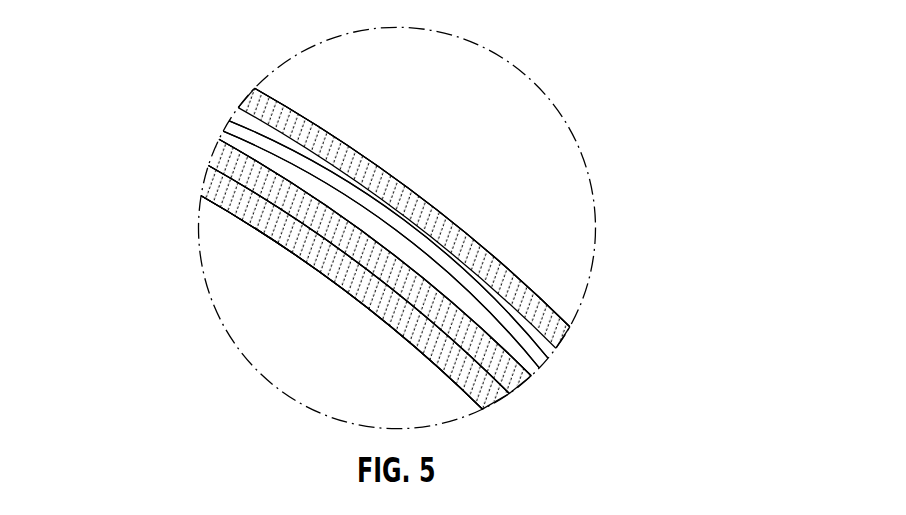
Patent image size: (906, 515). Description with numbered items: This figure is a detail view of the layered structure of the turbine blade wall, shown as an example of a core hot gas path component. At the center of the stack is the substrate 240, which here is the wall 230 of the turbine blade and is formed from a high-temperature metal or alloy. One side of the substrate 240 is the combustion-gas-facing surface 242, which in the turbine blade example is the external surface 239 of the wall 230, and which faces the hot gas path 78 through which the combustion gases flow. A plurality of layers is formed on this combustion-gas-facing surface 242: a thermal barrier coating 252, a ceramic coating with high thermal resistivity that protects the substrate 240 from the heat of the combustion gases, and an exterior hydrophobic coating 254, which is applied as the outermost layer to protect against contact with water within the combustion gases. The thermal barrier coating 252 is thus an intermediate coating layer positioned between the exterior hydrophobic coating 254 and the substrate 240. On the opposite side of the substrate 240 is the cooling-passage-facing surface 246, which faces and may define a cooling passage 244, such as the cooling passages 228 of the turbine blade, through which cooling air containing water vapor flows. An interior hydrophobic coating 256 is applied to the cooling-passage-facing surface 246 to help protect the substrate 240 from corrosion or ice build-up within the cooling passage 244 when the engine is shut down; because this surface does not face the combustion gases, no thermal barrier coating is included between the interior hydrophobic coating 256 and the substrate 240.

The substrate 240 is at (240, 120).
The wall 230 is at (385, 244).
The cooling passage 244 is at (510, 152).
The cooling passages 228 is at (412, 207).
The cooling-passage-facing surface 246 is at (478, 262).
The interior hydrophobic coating 256 is at (569, 328).
The combustion-gas-facing surface 242 is at (480, 336).
The external surface 239 is at (366, 274).
The thermal barrier coating 252 is at (509, 377).
The exterior hydrophobic coating 254 is at (485, 398).
The hot gas path 78 is at (333, 341).